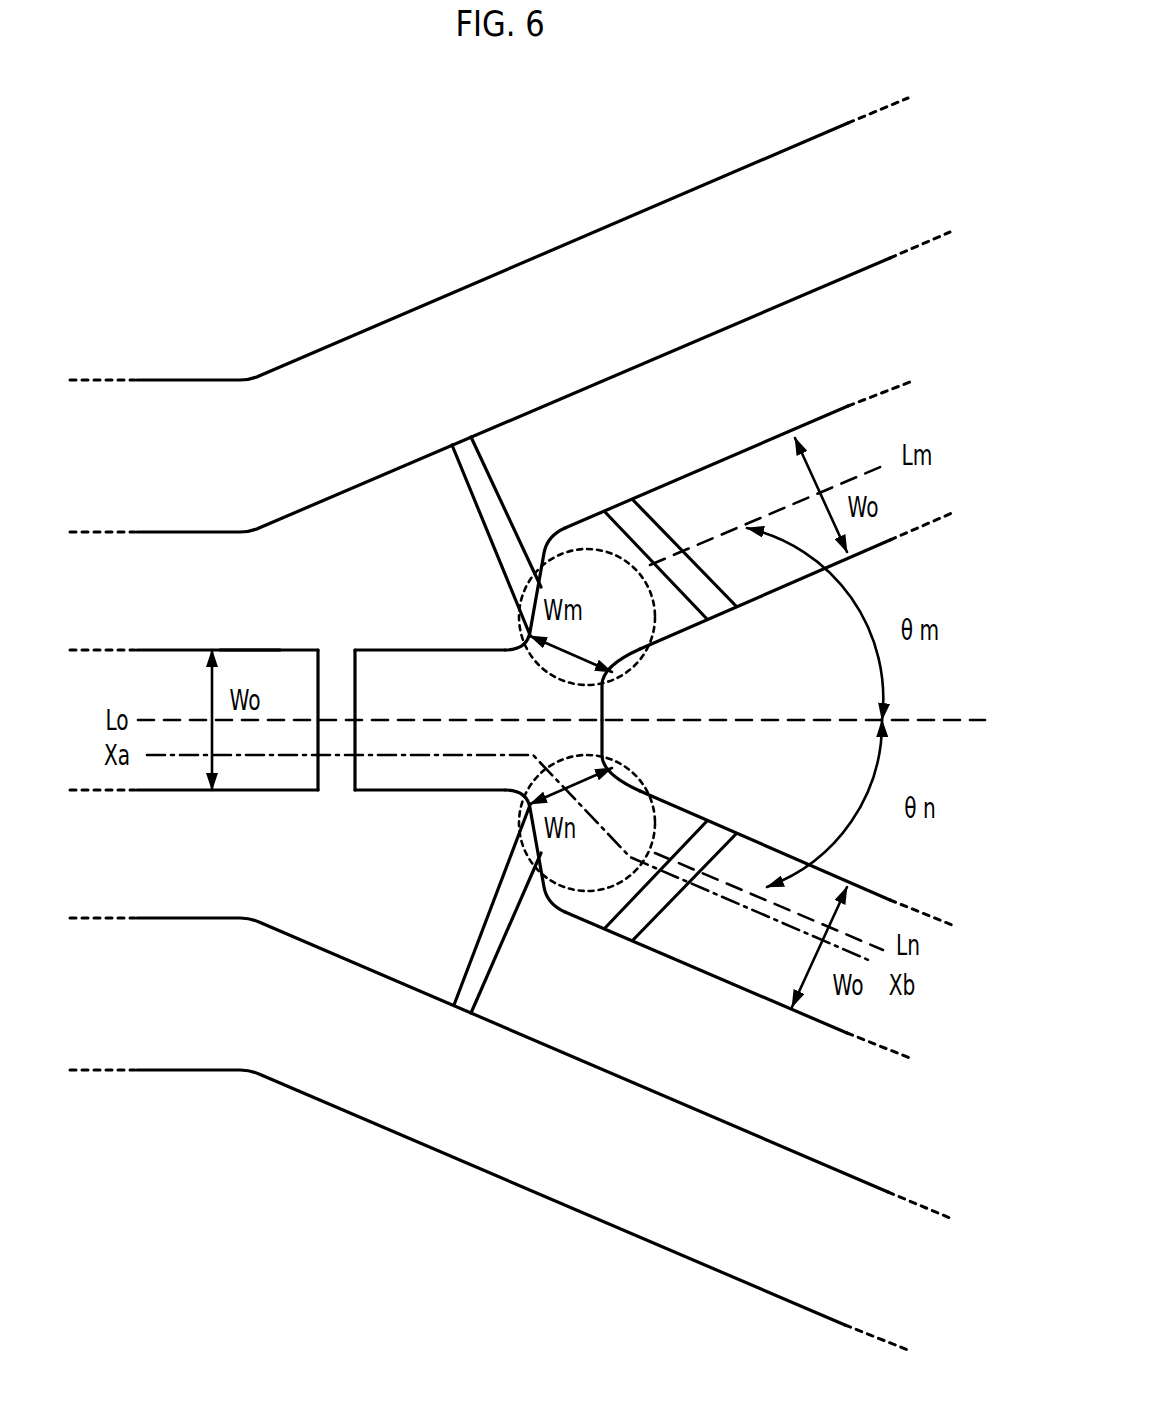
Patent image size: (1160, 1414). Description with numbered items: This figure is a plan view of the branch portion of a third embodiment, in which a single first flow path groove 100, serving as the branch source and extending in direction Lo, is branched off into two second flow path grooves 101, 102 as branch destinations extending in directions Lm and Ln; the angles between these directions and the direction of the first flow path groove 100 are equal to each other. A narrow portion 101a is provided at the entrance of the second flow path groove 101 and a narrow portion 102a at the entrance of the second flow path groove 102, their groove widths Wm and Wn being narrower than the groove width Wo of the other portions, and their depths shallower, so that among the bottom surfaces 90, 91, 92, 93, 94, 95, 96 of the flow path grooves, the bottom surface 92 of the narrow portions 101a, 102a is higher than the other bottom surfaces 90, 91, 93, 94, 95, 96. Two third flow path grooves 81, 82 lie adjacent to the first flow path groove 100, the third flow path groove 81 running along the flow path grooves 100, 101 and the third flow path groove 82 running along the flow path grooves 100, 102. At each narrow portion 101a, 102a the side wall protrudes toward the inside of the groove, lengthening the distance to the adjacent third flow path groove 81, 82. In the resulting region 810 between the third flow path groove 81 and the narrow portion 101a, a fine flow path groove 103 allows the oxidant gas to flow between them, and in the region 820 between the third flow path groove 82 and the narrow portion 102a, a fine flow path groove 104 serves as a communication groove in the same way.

The third flow path groove 81 is at (492, 280).
The third flow path groove 82 is at (601, 1068).
The bottom surface 90 is at (163, 697).
The bottom surface 91 is at (337, 660).
The bottom surface 92 is at (418, 697).
The bottom surface 93 is at (622, 513).
The bottom surface 94 is at (693, 517).
The bottom surface 95 is at (622, 922).
The bottom surface 96 is at (693, 947).
The first flow path groove 100 is at (250, 648).
The second flow path groove 101 is at (703, 470).
The narrow portion 101a is at (632, 652).
The second flow path groove 102 is at (797, 858).
The narrow portion 102a is at (632, 788).
The fine flow path groove 103 is at (486, 497).
The fine flow path groove 104 is at (498, 925).
The region 810 is at (416, 539).
The region 820 is at (418, 927).